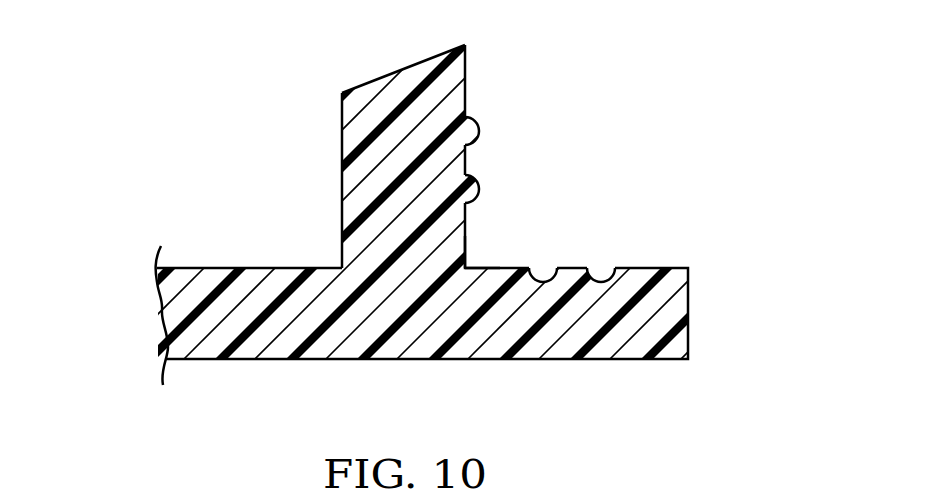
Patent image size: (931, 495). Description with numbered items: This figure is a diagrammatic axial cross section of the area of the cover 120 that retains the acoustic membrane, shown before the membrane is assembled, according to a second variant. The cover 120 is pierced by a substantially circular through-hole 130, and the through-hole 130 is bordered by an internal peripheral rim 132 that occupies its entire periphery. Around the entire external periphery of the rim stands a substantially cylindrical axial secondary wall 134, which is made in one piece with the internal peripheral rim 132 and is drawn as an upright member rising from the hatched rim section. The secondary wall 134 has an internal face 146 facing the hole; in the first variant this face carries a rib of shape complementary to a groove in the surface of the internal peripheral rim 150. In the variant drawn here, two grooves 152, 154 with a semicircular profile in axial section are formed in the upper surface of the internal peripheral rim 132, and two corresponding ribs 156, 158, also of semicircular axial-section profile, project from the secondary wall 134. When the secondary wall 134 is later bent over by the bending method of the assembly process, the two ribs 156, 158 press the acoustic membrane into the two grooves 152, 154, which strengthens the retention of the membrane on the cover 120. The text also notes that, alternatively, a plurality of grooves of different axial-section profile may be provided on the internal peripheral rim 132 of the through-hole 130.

The cover 120 is at (481, 215).
The through-hole 130 is at (482, 298).
The internal peripheral rim 132 is at (492, 322).
The substantially cylindrical axial secondary wall 134 is at (423, 147).
The internal face 146 is at (468, 64).
The internal peripheral rim 150 is at (476, 268).
The groove 152 is at (540, 271).
The groove 154 is at (604, 270).
The rib 156 is at (482, 117).
The rib 158 is at (482, 175).